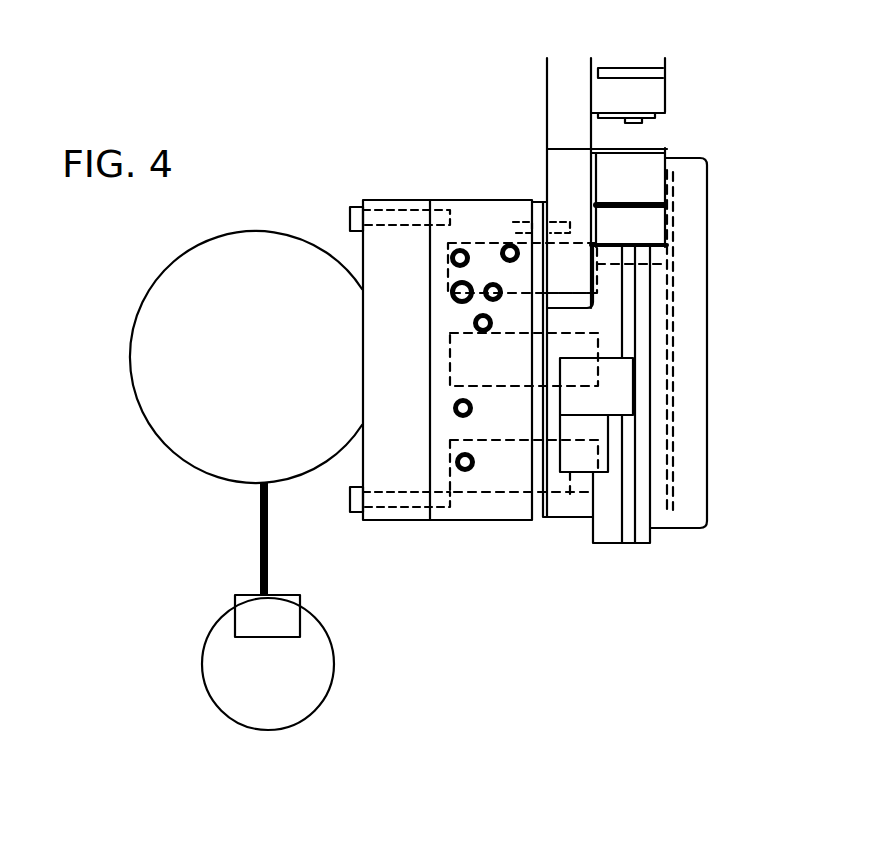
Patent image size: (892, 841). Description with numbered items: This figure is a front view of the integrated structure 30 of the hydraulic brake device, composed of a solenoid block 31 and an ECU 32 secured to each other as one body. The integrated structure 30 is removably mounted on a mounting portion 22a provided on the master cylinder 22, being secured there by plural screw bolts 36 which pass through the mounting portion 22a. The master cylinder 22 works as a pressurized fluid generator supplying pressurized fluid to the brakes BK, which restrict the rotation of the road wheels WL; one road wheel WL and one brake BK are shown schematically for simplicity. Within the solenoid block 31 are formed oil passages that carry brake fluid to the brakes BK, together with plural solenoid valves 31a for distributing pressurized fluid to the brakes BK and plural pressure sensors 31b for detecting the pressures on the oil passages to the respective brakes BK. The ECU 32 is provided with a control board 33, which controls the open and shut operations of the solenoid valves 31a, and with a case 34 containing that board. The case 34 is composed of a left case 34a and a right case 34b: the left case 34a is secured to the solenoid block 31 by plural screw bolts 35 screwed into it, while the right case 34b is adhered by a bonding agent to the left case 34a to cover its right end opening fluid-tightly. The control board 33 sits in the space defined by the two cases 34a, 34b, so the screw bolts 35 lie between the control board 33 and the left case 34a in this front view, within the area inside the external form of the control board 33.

The master cylinder 22 is at (262, 237).
The mounting portion 22a is at (390, 200).
The brake BK is at (283, 609).
The road wheel WL is at (316, 661).
The screw bolt 36 is at (356, 200).
The solenoid block 31 is at (480, 200).
The solenoid valve 31a is at (673, 255).
The pressure sensor 31b is at (492, 495).
The screw bolt 35 is at (567, 242).
The integrated structure 30 is at (682, 131).
The case 34 is at (729, 318).
The left case 34a is at (602, 548).
The right case 34b is at (707, 363).
The ECU 32 is at (631, 559).
The control board 33 is at (673, 337).